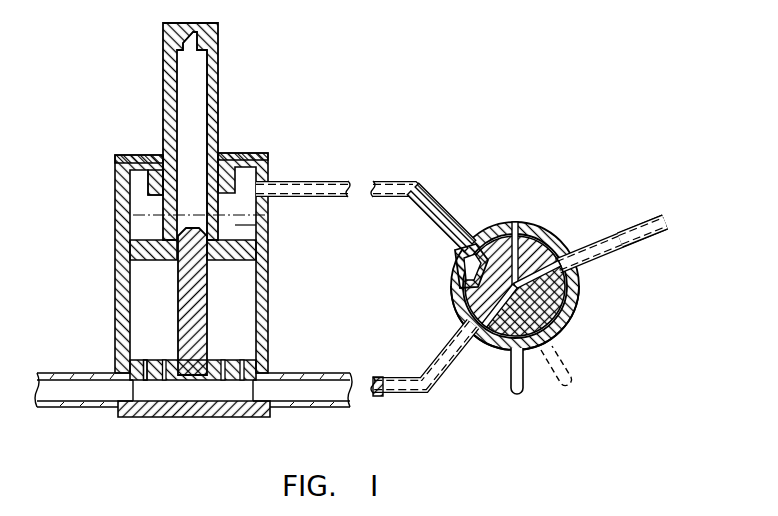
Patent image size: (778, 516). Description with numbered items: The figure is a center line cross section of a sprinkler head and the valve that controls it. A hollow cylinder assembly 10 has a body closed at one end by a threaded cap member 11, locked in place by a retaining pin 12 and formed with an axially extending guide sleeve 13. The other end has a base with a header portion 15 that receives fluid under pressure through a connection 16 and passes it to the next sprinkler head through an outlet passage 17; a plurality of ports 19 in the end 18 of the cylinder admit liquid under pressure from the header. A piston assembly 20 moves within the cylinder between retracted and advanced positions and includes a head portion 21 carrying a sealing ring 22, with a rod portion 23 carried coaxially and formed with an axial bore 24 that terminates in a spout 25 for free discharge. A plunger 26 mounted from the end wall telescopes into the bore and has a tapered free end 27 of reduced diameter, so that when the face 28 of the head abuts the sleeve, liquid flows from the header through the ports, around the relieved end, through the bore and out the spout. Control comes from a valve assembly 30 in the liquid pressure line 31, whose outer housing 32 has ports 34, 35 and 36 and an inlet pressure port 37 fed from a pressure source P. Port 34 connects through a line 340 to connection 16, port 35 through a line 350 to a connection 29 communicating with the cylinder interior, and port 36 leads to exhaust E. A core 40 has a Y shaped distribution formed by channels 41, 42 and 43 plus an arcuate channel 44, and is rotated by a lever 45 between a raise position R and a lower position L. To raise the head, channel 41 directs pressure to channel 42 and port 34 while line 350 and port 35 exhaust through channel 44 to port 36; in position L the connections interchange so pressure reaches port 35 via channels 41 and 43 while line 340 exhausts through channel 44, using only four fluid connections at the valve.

The hollow cylinder assembly 10 is at (97, 246).
The threaded cap member 11 is at (232, 155).
The retaining pin 12 is at (262, 153).
The guide sleeve 13 is at (135, 155).
The header portion 15 is at (185, 417).
The connection 16 is at (292, 373).
The outlet passage 17 is at (78, 373).
The end of the cylinder 18 is at (228, 360).
The ports 19 is at (165, 360).
The piston assembly 20 is at (148, 207).
The head portion 21 is at (122, 270).
The sealing ring 22 is at (128, 252).
The rod portion 23 is at (165, 83).
The axial bore 24 is at (207, 100).
The spout 25 is at (208, 25).
The plunger 26 is at (208, 330).
The free end 27 is at (186, 222).
The face 28 is at (143, 236).
The connection 29 is at (246, 210).
The valve assembly 30 is at (583, 312).
The liquid pressure line 31 is at (632, 228).
The outer housing 32 is at (550, 344).
The port 34 is at (442, 356).
The port 35 is at (462, 236).
The port 36 is at (464, 287).
The inlet pressure port 37 is at (572, 254).
The core 40 is at (556, 334).
The channel 41 is at (548, 287).
The channel 42 is at (480, 311).
The channel 43 is at (517, 222).
The arcuate channel 44 is at (465, 264).
The lever 45 is at (510, 378).
The line 340 is at (378, 396).
The line 350 is at (406, 180).
The exhaust direction E is at (450, 286).
The pressure supply P is at (672, 216).
The rotation axis R is at (516, 408).
The lower position of lever L is at (564, 398).